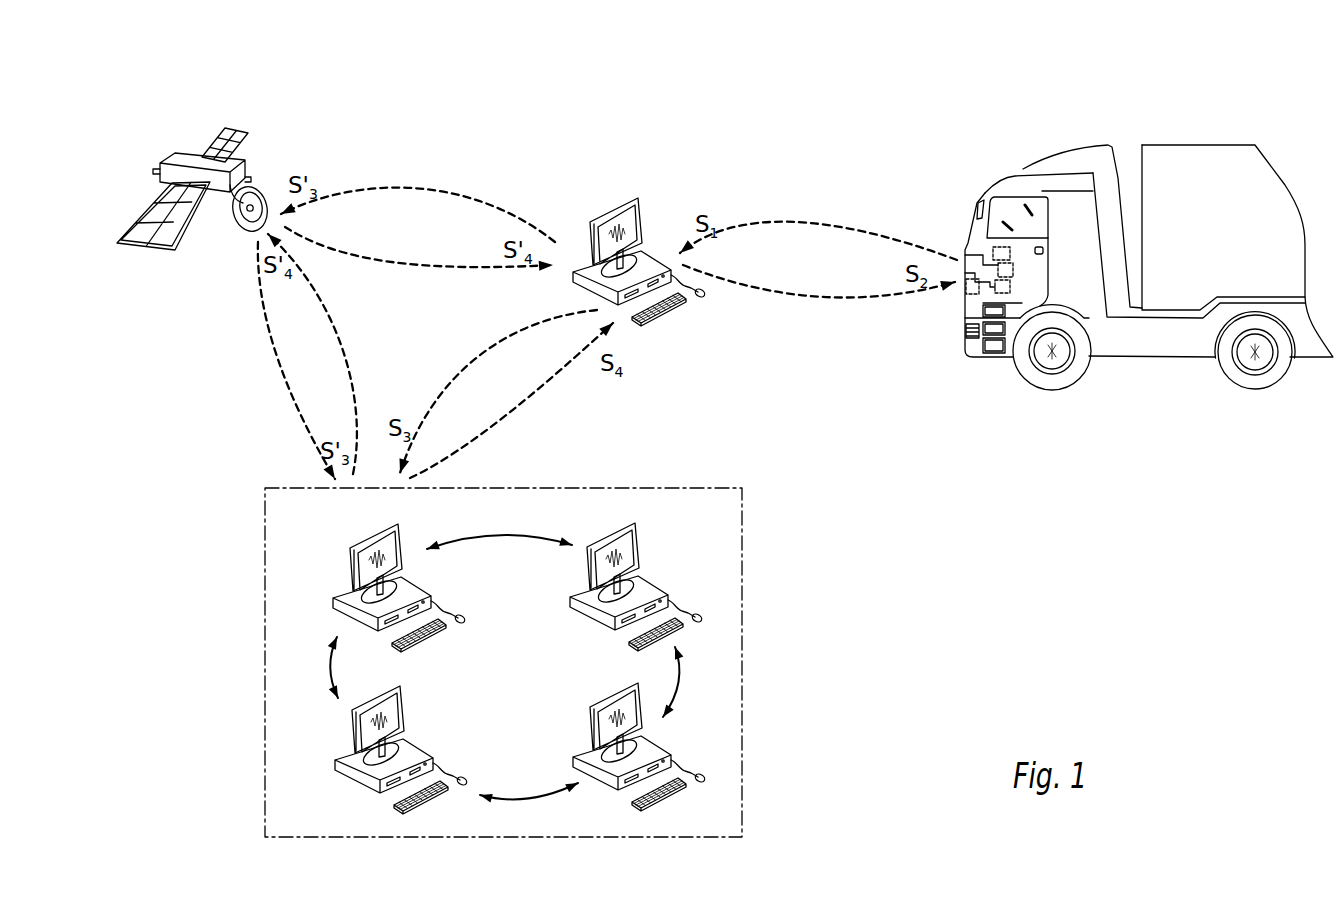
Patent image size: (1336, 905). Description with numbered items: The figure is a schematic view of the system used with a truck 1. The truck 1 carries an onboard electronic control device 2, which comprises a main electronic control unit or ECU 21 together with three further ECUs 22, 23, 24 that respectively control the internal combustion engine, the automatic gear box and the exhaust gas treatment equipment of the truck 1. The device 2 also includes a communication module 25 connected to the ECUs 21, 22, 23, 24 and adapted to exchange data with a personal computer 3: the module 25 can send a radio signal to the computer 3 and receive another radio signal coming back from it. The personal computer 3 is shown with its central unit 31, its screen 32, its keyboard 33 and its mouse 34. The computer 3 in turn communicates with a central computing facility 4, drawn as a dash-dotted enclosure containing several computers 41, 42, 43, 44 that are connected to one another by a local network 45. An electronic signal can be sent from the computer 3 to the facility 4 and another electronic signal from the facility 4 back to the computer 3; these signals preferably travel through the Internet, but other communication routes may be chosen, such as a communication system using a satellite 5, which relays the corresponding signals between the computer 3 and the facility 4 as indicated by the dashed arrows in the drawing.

The truck 1 is at (1146, 272).
The onboard electronic control device 2 is at (1068, 356).
The personal computer 3 is at (644, 247).
The central computing facility 4 is at (747, 477).
The satellite 5 is at (264, 154).
The main electronic control unit 21 is at (1010, 253).
The ECU 22 is at (1013, 270).
The ECU 23 is at (1010, 290).
The ECU 24 is at (967, 283).
The communication module 25 is at (1007, 225).
The central unit 31 is at (588, 284).
The screen 32 is at (606, 220).
The keyboard 33 is at (680, 329).
The mouse 34 is at (727, 309).
The computer 41 is at (665, 573).
The computer 42 is at (338, 577).
The computer 43 is at (328, 750).
The computer 44 is at (680, 747).
The local network 45 is at (499, 529).